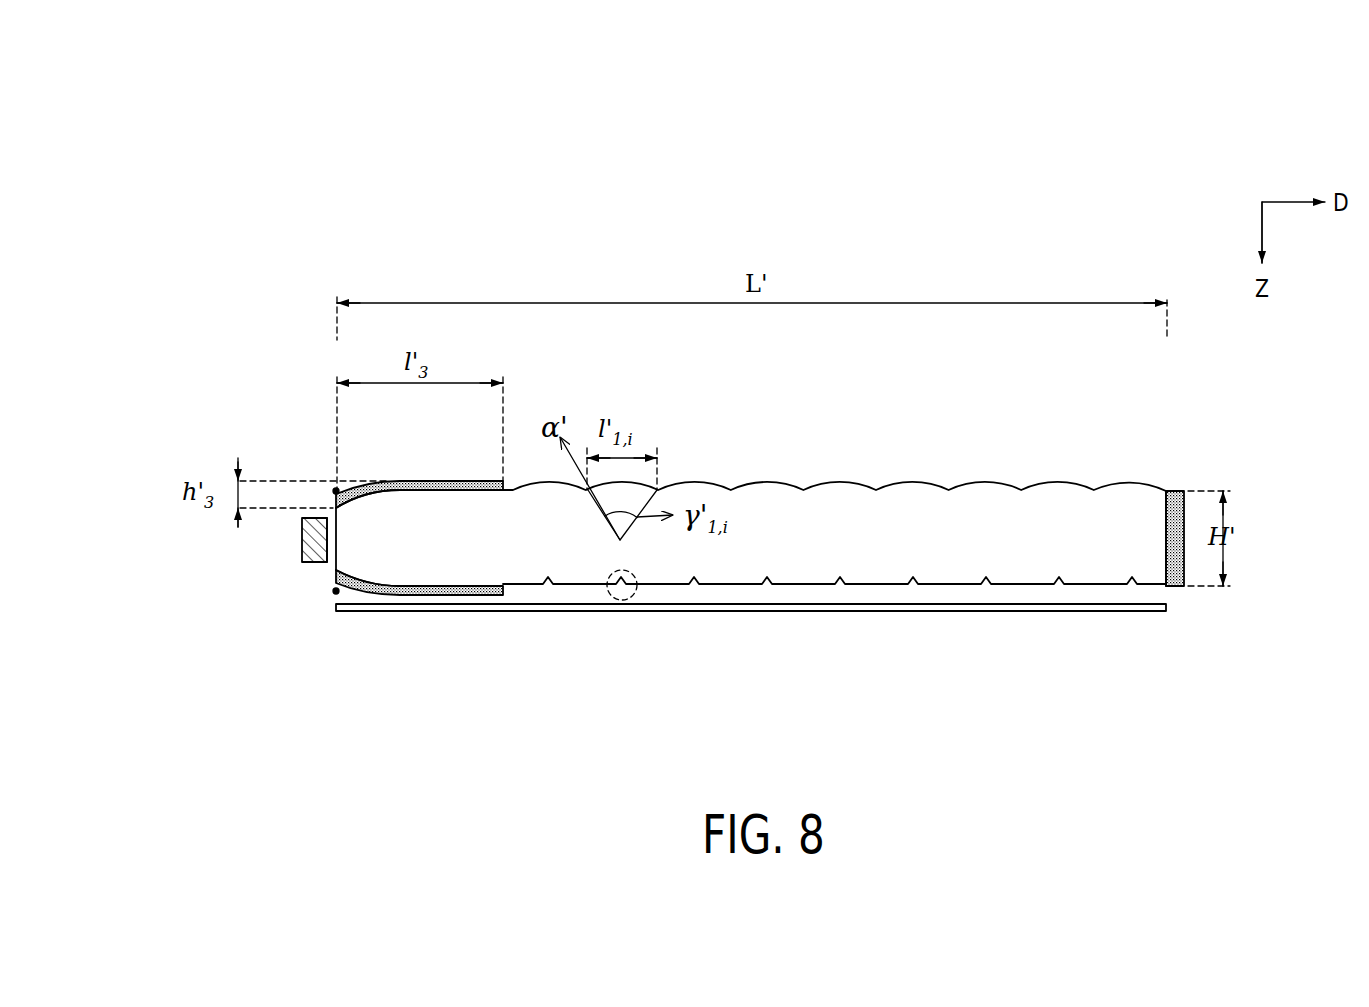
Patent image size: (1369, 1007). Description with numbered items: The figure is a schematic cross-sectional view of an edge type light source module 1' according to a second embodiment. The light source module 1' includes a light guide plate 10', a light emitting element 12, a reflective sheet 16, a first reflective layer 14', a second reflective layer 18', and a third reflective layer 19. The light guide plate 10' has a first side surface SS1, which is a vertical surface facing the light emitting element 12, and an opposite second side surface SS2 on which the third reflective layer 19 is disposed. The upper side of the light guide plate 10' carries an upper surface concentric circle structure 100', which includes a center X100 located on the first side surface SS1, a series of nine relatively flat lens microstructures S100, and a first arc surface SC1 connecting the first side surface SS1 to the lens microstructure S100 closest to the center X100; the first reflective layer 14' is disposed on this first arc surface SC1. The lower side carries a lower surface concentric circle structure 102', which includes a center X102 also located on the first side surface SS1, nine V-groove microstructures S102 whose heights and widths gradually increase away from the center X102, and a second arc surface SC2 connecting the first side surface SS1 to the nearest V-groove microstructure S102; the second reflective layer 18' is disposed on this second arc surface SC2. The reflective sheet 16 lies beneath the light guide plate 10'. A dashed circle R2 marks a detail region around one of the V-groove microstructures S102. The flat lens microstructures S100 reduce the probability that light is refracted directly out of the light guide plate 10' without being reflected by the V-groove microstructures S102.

The light source module 1' is at (695, 375).
The light guide plate 10' is at (773, 498).
The light emitting element 12 is at (305, 537).
The first reflective layer 14' is at (419, 457).
The reflective sheet 16 is at (542, 606).
The second reflective layer 18' is at (419, 623).
The third reflective layer 19 is at (1175, 582).
The upper surface concentric circle structure 100' is at (642, 289).
The lower surface concentric circle structure 102' is at (719, 361).
The center of the upper surface concentric circle structure X100 is at (334, 490).
The lens microstructures S100 is at (840, 480).
The first arc surface SC1 is at (366, 501).
The center of the lower surface concentric circle structure X102 is at (334, 593).
The V-groove microstructures S102 is at (848, 573).
The second arc surface SC2 is at (366, 572).
The first side surface SS1 is at (326, 549).
The second side surface SS2 is at (1169, 514).
The radius region R2 is at (632, 574).